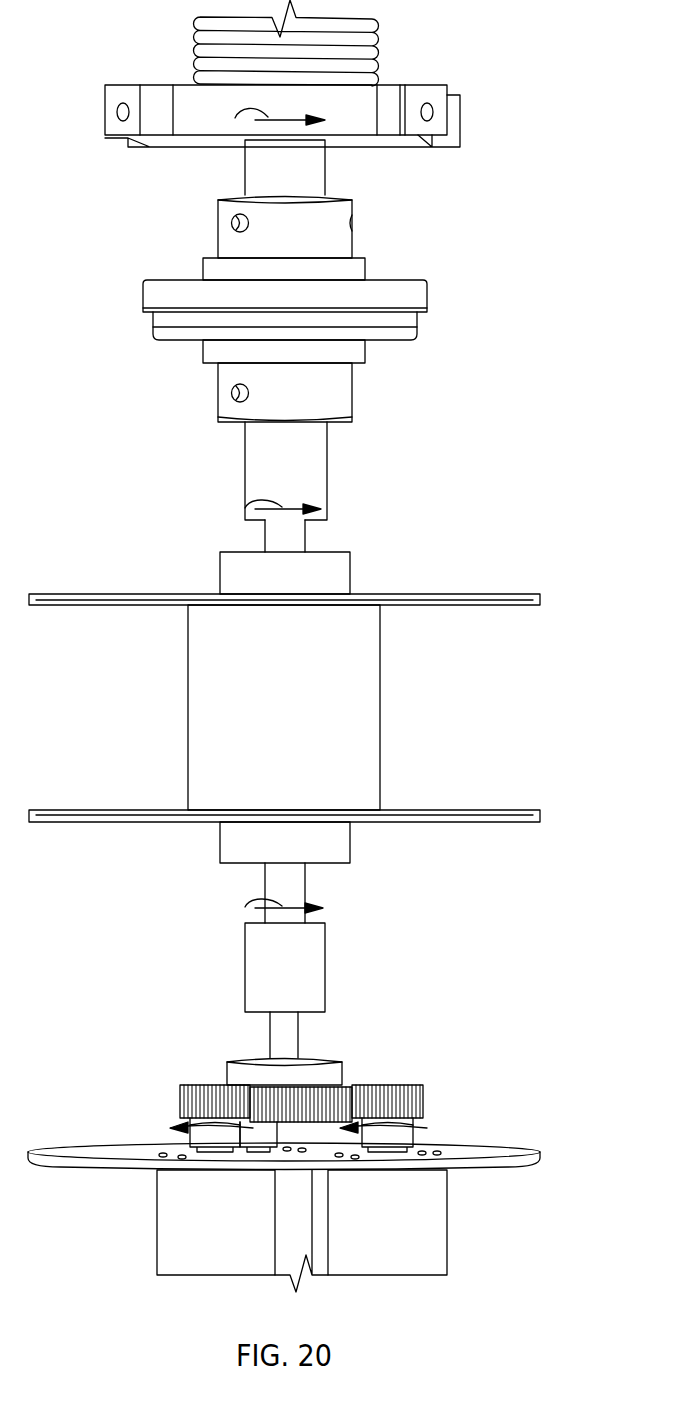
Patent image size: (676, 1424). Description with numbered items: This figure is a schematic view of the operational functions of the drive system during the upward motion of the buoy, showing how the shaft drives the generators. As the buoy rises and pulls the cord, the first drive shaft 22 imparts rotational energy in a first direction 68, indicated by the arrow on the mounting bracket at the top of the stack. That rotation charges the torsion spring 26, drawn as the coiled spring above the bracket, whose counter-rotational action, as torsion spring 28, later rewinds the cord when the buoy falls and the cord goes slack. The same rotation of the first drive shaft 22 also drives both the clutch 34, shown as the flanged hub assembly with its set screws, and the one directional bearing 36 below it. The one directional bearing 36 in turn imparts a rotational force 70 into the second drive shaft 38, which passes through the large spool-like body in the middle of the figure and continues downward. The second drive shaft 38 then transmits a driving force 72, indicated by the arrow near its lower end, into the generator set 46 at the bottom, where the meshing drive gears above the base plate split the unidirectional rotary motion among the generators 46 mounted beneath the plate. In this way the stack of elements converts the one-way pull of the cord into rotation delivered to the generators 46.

The torsion spring 26 is at (374, 43).
The torsion spring 28 is at (457, 118).
The first direction 68 is at (235, 118).
The first drive shaft 22 is at (322, 173).
The clutch 34 is at (418, 302).
The one directional bearing 36 is at (318, 468).
The rotational force 70 is at (245, 508).
The second drive shaft 38 is at (298, 898).
The driving force 72 is at (245, 907).
The generators 46 is at (227, 1240).